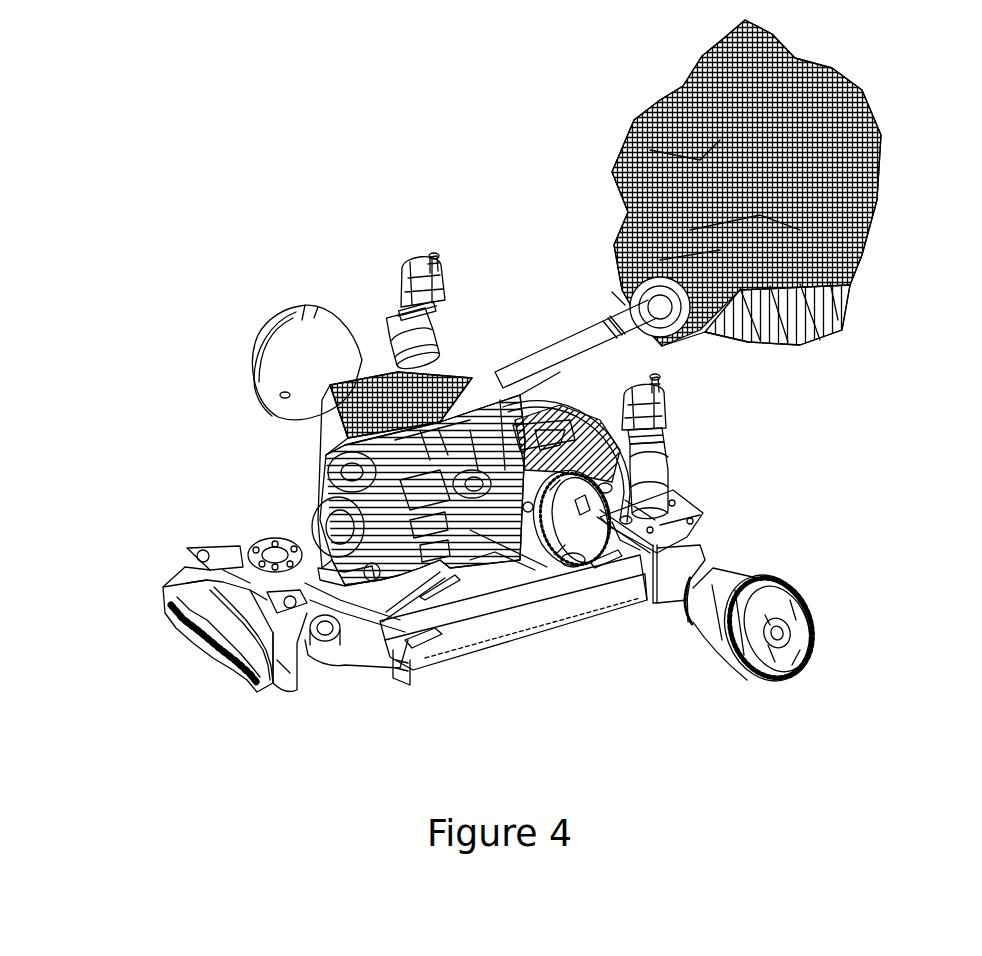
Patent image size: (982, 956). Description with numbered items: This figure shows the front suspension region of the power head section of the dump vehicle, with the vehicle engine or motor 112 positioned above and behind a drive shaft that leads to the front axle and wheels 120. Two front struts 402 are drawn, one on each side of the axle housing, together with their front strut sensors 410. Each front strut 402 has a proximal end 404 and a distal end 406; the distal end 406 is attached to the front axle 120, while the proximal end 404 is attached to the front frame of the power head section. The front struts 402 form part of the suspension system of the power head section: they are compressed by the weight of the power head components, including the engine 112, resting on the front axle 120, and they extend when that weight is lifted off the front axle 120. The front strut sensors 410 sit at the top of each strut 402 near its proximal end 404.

The vehicle engine or motor 112 is at (862, 276).
The front axle and wheels 120 is at (852, 619).
The front strut 402 is at (436, 347).
The proximal end 404 is at (413, 264).
The distal end 406 is at (662, 518).
The front strut sensor 410 is at (422, 308).